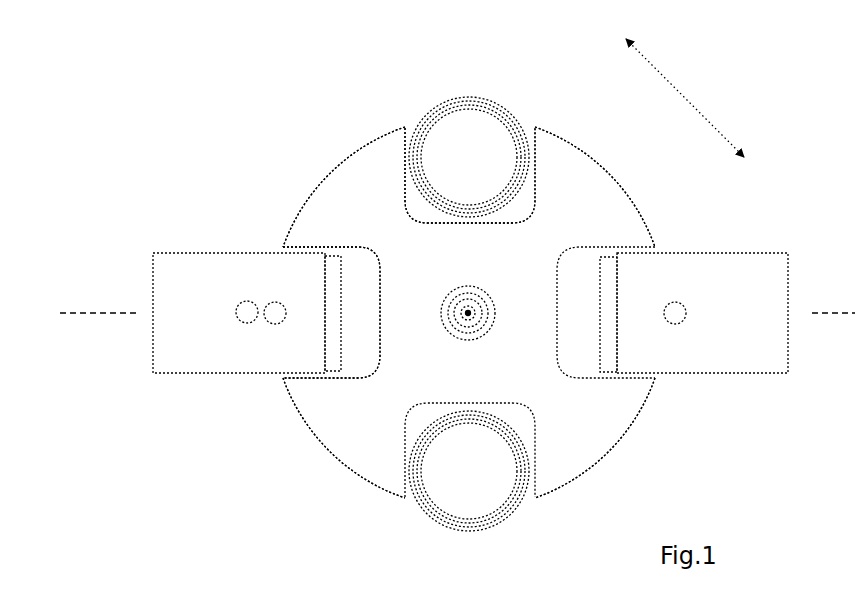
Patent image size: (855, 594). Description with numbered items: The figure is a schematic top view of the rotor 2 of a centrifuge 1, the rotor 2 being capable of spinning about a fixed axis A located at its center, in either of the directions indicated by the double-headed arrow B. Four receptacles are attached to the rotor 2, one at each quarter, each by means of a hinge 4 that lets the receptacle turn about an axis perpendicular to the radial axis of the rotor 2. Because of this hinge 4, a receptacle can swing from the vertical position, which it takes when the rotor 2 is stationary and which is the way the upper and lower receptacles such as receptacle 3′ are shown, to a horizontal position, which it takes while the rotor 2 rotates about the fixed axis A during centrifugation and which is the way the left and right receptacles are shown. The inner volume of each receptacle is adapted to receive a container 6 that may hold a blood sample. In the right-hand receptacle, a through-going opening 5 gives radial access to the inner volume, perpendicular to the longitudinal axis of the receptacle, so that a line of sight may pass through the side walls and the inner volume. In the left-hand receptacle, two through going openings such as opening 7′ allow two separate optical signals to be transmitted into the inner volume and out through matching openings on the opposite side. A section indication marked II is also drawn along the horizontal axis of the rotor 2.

The centrifuge 1 is at (387, 65).
The rotor 2 is at (350, 195).
The receptacle 3′ is at (497, 102).
The hinge 4 is at (540, 155).
The through-going opening 5 is at (678, 302).
The container 6 is at (470, 143).
The through going opening 7′ is at (275, 320).
The fixed axis A is at (478, 300).
The arrow B is at (672, 72).
The section line II is at (60, 313).